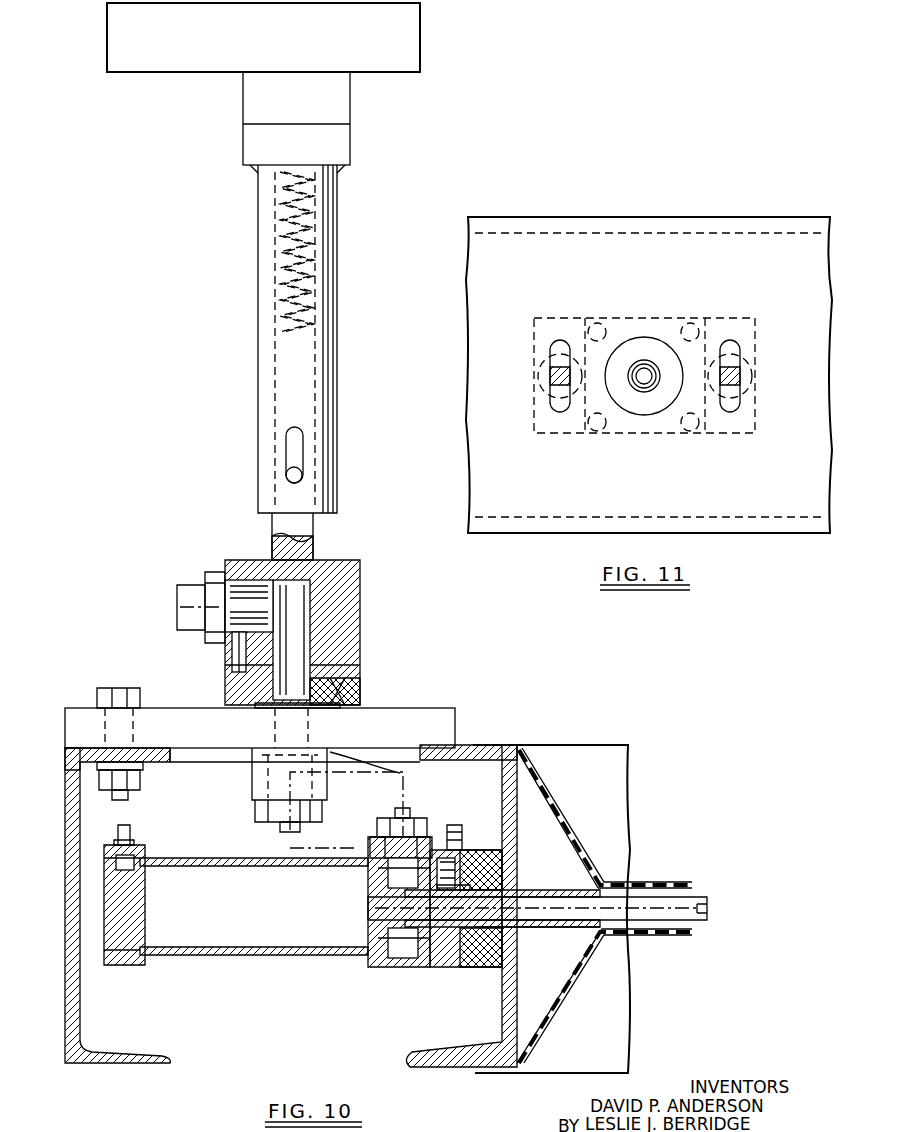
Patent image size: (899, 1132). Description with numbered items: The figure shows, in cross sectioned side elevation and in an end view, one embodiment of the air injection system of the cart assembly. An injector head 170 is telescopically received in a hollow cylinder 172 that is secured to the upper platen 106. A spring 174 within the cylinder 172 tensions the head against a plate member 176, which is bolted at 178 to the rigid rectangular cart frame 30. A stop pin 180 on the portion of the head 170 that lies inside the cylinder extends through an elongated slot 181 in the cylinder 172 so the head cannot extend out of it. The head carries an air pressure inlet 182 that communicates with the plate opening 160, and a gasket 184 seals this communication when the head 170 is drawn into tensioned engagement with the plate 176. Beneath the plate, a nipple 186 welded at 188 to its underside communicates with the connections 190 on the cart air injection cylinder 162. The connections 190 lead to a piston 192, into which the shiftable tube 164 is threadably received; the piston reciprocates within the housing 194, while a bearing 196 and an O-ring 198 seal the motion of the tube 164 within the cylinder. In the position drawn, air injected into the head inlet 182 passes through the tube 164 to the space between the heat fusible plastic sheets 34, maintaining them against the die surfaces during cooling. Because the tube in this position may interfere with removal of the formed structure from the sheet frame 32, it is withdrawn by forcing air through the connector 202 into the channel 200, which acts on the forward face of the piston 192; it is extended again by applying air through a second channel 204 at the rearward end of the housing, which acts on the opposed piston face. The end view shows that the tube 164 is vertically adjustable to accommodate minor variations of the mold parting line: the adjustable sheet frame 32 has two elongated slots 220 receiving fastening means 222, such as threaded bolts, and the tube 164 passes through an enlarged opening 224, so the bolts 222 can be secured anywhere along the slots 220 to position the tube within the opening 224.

In FIG. 10, the upper platen 106 is at (398, 54).
In FIG. 10, the spring 174 is at (340, 240).
In FIG. 10, the hollow cylinder 172 is at (335, 360).
In FIG. 10, the elongated slot 181 is at (291, 450).
In FIG. 10, the stop pin 180 is at (297, 475).
In FIG. 10, the air pressure inlet 182 is at (228, 592).
In FIG. 10, the injector head 170 is at (345, 610).
In FIG. 10, the bolt 178 is at (120, 700).
In FIG. 10, the gasket 184 is at (355, 700).
In FIG. 10, the plate member 176 is at (445, 720).
In FIG. 10, the plate opening 160 is at (295, 765).
In FIG. 10, the nipple 186 is at (262, 780).
In FIG. 10, the weld 188 is at (375, 800).
In FIG. 10, the connections 190 is at (402, 840).
In FIG. 10, the rigid rectangular cart frame 30 is at (68, 840).
In FIG. 10, the second channel 204 is at (125, 880).
In FIG. 10, the housing 194 is at (202, 866).
In FIG. 10, the piston 192 is at (372, 893).
In FIG. 10, the connector 202 is at (455, 842).
In FIG. 10, the channel 200 is at (445, 879).
In FIG. 10, the tube 164 is at (712, 905).
In FIG. 11, the tube 164 is at (648, 366).
In FIG. 10, the adjustable rectangular sheet frame 32 is at (524, 762).
In FIG. 11, the adjustable rectangular sheet frame 32 is at (742, 284).
In FIG. 10, the heat fusible plastic sheets 34 is at (558, 832).
In FIG. 10, the enlarged opening 224 is at (503, 938).
In FIG. 11, the enlarged opening 224 is at (660, 410).
In FIG. 10, the injection cylinder 162 is at (328, 974).
In FIG. 11, the injection cylinder 162 is at (626, 432).
In FIG. 10, the O-ring 198 is at (449, 968).
In FIG. 10, the bearing 196 is at (486, 968).
In FIG. 11, the elongated slots 220 is at (556, 358).
In FIG. 11, the fastening means 222 is at (562, 388).